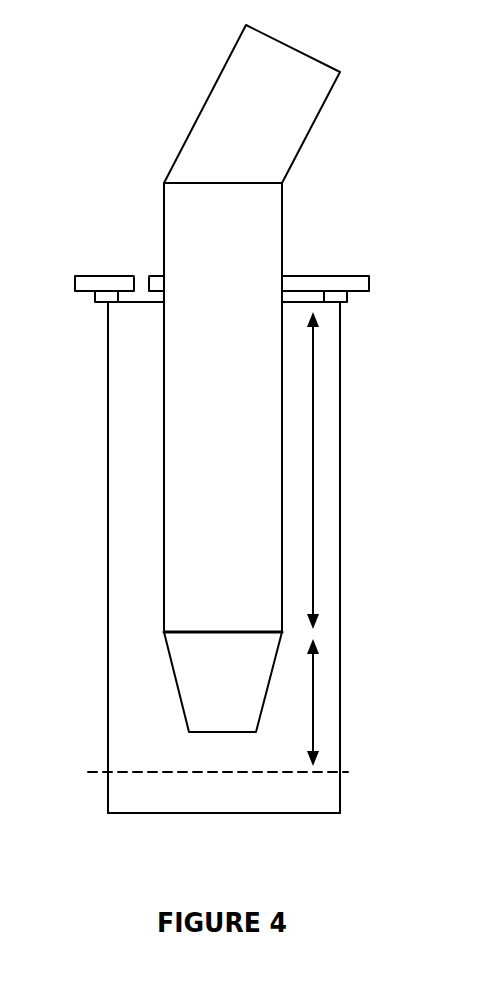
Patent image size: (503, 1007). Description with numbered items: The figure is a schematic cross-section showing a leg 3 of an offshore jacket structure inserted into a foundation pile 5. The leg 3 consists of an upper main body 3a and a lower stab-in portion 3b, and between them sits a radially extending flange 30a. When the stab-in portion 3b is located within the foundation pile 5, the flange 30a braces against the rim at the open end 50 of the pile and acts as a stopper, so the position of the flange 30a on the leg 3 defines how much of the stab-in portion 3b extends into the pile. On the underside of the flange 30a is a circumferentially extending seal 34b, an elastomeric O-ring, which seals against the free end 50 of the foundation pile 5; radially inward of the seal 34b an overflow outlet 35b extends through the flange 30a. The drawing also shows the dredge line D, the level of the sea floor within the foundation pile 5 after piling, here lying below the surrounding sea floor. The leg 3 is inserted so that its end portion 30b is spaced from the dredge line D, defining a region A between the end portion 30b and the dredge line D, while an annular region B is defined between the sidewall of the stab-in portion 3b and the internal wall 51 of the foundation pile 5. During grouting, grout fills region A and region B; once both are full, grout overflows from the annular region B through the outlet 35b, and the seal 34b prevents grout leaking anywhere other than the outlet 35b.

The leg 3 is at (252, 378).
The main body 3a is at (295, 100).
The stab-in portion 3b is at (202, 353).
The flange 30a is at (313, 276).
The end portion 30b is at (215, 680).
The circumferentially extending seal 34b is at (92, 292).
The overflow outlet 35b is at (140, 277).
The open end 50 is at (303, 302).
The internal wall 51 is at (108, 487).
The foundation pile 5 is at (234, 557).
The annular region B is at (315, 465).
The region A is at (313, 673).
The dredge line D is at (327, 772).